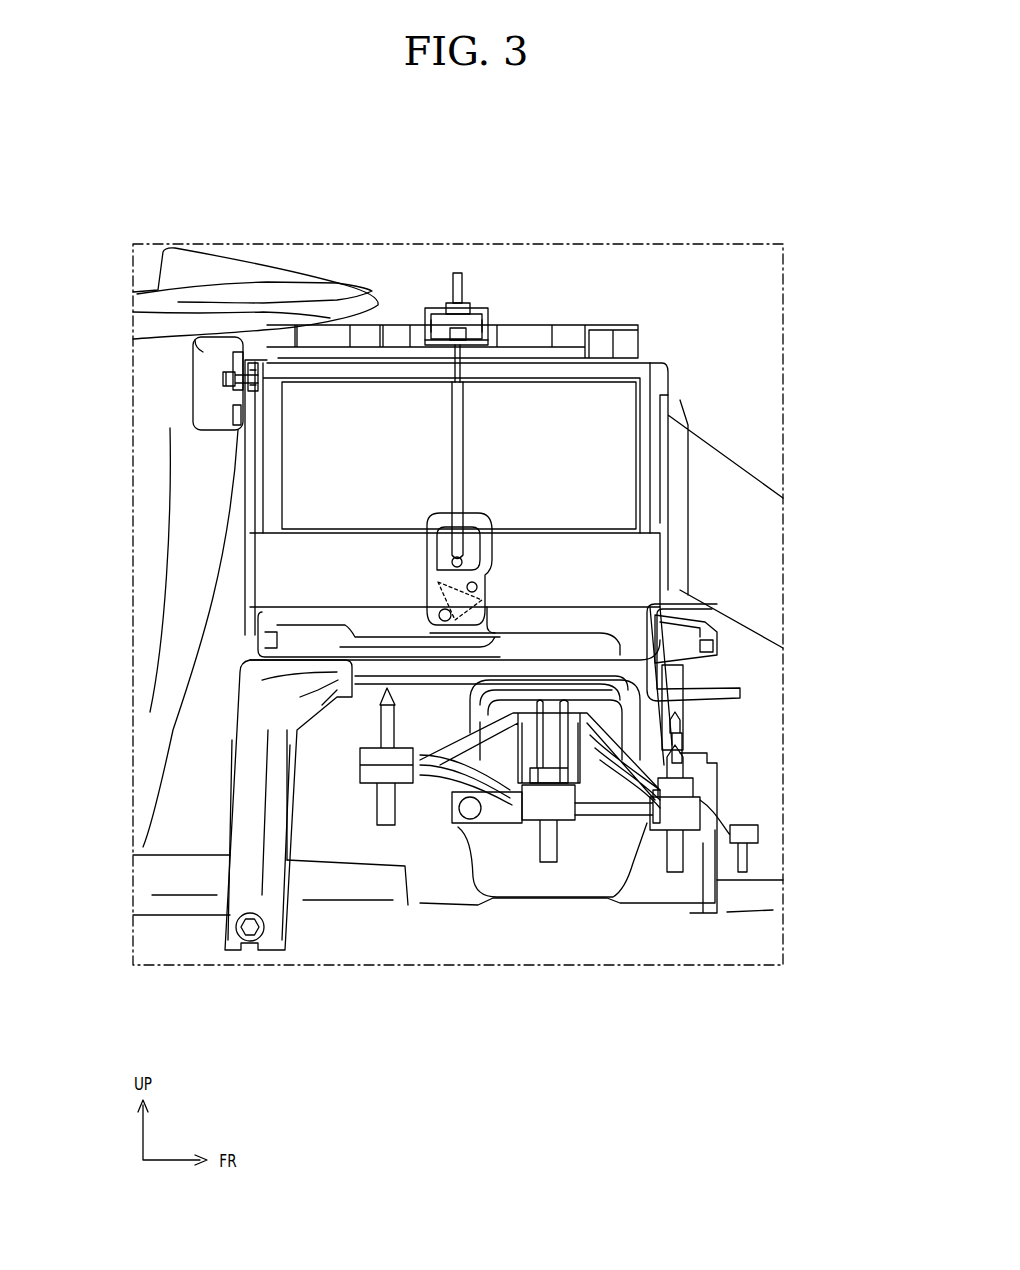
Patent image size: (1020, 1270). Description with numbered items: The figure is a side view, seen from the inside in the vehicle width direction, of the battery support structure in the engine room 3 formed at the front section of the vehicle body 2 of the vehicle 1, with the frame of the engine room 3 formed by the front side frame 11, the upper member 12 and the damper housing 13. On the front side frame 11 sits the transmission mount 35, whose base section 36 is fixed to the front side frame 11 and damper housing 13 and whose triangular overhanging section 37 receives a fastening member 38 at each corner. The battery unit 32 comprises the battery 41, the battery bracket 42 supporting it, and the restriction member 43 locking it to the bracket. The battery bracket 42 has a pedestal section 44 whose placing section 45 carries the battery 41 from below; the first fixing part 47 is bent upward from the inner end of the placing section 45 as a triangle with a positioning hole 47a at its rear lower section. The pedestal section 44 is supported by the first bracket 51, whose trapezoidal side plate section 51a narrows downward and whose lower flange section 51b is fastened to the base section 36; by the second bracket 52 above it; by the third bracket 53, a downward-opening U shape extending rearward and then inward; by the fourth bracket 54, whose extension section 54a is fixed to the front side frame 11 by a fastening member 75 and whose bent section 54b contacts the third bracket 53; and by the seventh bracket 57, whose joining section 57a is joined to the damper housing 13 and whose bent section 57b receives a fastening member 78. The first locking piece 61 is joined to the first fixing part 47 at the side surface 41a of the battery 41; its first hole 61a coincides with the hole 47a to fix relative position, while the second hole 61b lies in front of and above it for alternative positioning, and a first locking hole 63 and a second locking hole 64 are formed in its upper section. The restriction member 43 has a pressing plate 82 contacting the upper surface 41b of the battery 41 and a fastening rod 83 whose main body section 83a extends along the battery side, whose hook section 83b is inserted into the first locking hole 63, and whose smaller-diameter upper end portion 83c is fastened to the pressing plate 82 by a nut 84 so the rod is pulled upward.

The vehicle 1 is at (603, 121).
The vehicle body 2 is at (505, 173).
The engine room 3 is at (747, 776).
The front side frame 11 is at (421, 940).
The upper member 12 is at (765, 572).
The damper housing 13 is at (155, 558).
The battery unit 32 is at (150, 490).
The transmission mount 35 is at (549, 926).
The base section 36 is at (597, 872).
The overhanging section 37 is at (488, 765).
The fastening member 38 is at (699, 1053).
The battery 41 is at (255, 489).
The side surface 41a is at (297, 453).
The upper surface 41b is at (372, 327).
The battery bracket 42 is at (206, 684).
The restriction member 43 is at (490, 306).
The pedestal section 44 is at (214, 624).
The placing section 45 is at (330, 622).
The first fixing part 47 is at (478, 585).
The hole 47a is at (330, 683).
The first bracket 51 is at (695, 729).
The side plate section 51a is at (730, 693).
The lower flange section 51b is at (702, 762).
The second bracket 52 is at (680, 641).
The third bracket 53 is at (437, 714).
The fourth bracket 54 is at (203, 799).
The extension section 54a is at (240, 850).
The bent section 54b is at (335, 700).
The seventh bracket 57 is at (212, 312).
The joining section 57a is at (195, 354).
The bent section 57b is at (255, 350).
The first locking piece 61 is at (428, 516).
The first hole 61a is at (179, 711).
The second hole 61b is at (478, 582).
The first locking hole 63 is at (465, 545).
The second locking hole 64 is at (452, 442).
The fastening member 75 is at (238, 925).
The fastening member 78 is at (222, 378).
The pressing plate 82 is at (437, 312).
The fastening rod 83 is at (476, 420).
The main body section 83a is at (463, 407).
The hook section 83b is at (440, 578).
The upper end portion 83c is at (450, 322).
The nut 84 is at (486, 300).